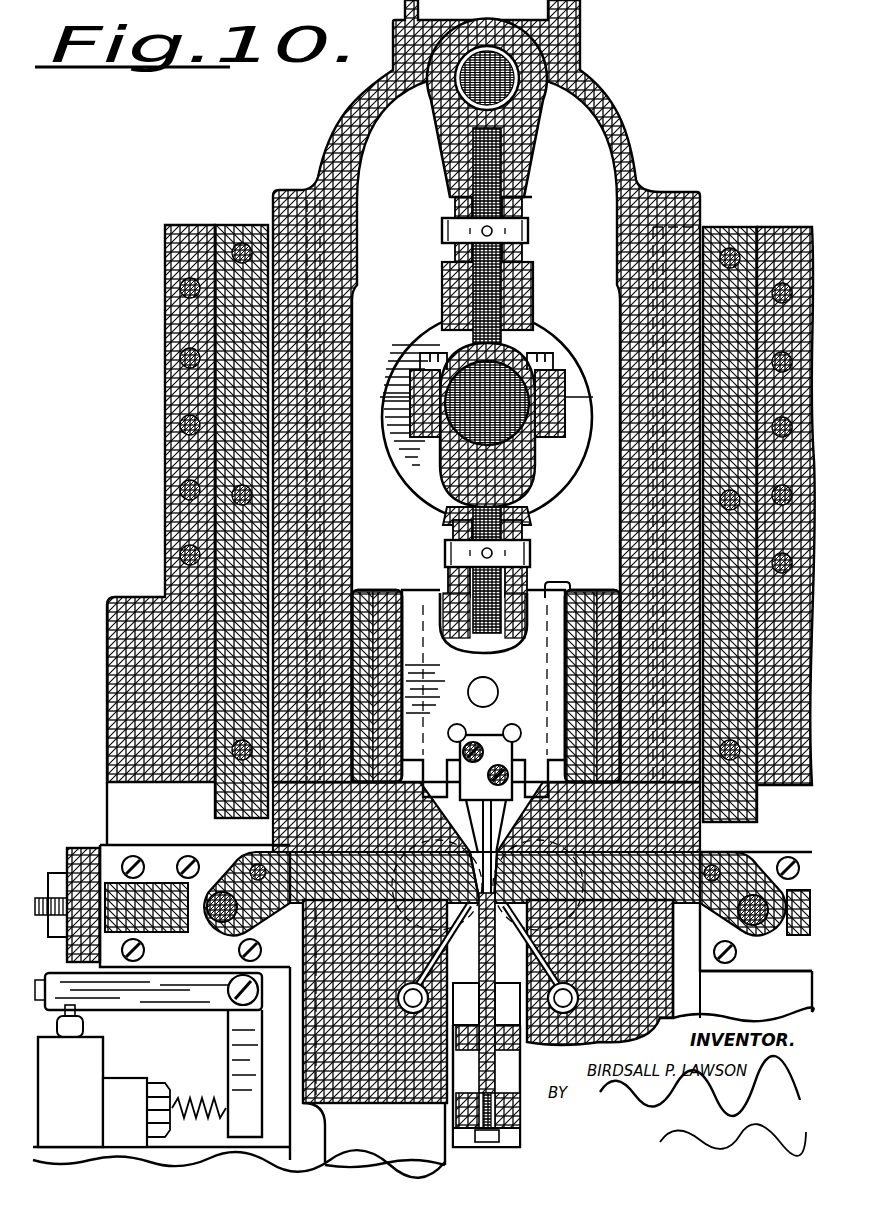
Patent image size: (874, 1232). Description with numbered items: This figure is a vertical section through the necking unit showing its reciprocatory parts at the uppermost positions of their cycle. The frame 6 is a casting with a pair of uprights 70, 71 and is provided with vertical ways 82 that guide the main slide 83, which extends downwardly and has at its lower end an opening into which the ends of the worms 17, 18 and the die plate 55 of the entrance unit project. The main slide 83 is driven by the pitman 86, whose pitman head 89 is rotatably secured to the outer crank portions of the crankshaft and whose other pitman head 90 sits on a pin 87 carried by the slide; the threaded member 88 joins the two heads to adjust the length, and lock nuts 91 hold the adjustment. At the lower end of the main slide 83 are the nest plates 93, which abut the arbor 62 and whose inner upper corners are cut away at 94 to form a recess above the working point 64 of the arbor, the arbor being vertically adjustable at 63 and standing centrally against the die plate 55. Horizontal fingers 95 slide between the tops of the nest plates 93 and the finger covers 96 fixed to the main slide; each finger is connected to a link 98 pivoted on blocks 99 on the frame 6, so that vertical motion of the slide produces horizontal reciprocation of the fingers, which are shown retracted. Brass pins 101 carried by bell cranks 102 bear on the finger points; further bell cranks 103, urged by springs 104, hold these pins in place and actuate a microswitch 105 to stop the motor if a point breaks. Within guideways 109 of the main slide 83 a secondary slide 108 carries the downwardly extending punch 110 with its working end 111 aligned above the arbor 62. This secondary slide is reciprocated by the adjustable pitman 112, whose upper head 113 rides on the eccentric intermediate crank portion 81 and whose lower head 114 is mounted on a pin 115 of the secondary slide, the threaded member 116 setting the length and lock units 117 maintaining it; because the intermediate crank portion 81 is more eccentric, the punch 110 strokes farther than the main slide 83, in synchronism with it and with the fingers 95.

The frame 6 is at (118, 792).
The worm 17 is at (476, 824).
The worm 18 is at (515, 826).
The die plate 55 is at (522, 1022).
The arbor 62 is at (466, 1004).
The vertical adjustment 63 is at (455, 1136).
The working point 64 is at (507, 1004).
The upright 70 is at (163, 326).
The upright 71 is at (787, 240).
The intermediate crank portion 81 is at (497, 395).
The vertical ways 82 is at (272, 215).
The main slide 83 is at (403, 1128).
The pitman 86 is at (428, 229).
The pin 87 is at (505, 75).
The threaded member 88 is at (460, 236).
The pitman head 89 is at (432, 330).
The pitman head 90 is at (522, 160).
The lock nuts 91 is at (530, 255).
The nest plates 93 is at (675, 990).
The cut-away corners 94 is at (507, 882).
The fingers 95 is at (223, 848).
The finger covers 96 is at (283, 830).
The link 98 is at (224, 932).
The blocks 99 is at (132, 850).
The brass pins 101 is at (420, 950).
The bell cranks 102 is at (690, 981).
The bell cranks 103 is at (230, 1040).
The springs 104 is at (212, 1100).
The microswitch 105 is at (85, 1068).
The secondary slide 108 is at (596, 600).
The guideways 109 is at (400, 593).
The punch 110 is at (484, 757).
The working end 111 is at (486, 876).
The pitman 112 is at (425, 541).
The upper head 113 is at (440, 483).
The lower head 114 is at (548, 598).
The pin 115 is at (496, 695).
The threaded member 116 is at (455, 556).
The lock units 117 is at (524, 532).